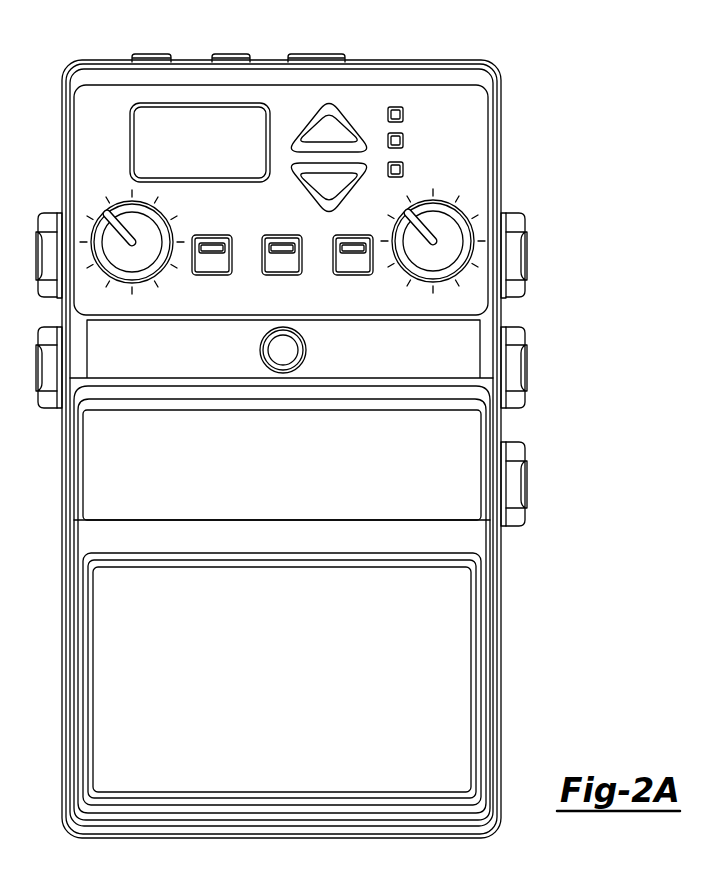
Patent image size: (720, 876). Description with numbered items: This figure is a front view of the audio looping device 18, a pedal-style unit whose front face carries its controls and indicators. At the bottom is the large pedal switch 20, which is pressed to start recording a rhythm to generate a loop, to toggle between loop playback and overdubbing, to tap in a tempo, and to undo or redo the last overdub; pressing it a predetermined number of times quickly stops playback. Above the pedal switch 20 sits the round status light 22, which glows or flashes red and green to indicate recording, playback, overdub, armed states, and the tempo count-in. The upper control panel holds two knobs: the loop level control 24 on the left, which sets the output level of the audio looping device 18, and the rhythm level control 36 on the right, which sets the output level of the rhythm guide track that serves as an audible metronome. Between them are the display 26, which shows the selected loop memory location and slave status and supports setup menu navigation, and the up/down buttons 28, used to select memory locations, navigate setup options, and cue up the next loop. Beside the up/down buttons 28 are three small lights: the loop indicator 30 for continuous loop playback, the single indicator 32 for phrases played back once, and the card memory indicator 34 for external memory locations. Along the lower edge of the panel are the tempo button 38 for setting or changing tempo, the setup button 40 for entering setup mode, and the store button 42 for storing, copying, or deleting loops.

The audio looping device 18 is at (530, 47).
The pedal switch 20 is at (125, 712).
The status light 22 is at (260, 354).
The loop level control 24 is at (124, 218).
The display 26 is at (204, 103).
The up/down buttons 28 is at (331, 120).
The loop indicator 30 is at (405, 115).
The single indicator 32 is at (405, 141).
The card memory indicator 34 is at (405, 170).
The rhythm level control 36 is at (473, 231).
The tempo button 38 is at (213, 234).
The setup button 40 is at (282, 277).
The store button 42 is at (353, 277).